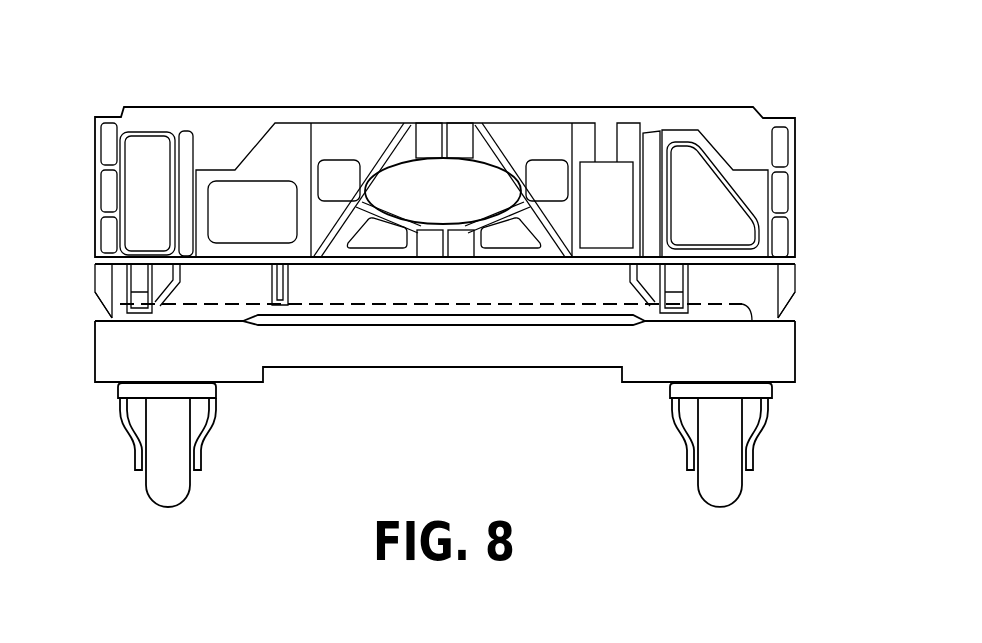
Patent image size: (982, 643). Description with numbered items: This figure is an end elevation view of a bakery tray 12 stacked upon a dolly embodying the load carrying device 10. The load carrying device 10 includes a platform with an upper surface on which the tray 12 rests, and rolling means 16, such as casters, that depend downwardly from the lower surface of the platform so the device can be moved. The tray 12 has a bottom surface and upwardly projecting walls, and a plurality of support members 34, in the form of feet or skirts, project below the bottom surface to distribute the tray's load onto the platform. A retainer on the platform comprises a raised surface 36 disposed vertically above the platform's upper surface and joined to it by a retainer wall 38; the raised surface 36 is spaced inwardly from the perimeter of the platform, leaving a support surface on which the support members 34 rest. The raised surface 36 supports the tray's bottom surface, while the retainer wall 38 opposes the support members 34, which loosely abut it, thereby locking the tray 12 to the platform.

The load carrying device 10 is at (815, 377).
The tray 12 is at (234, 102).
The rolling means 16 is at (167, 497).
The support members 34 is at (120, 305).
The raised surface 36 is at (443, 306).
The retainer wall 38 is at (225, 313).